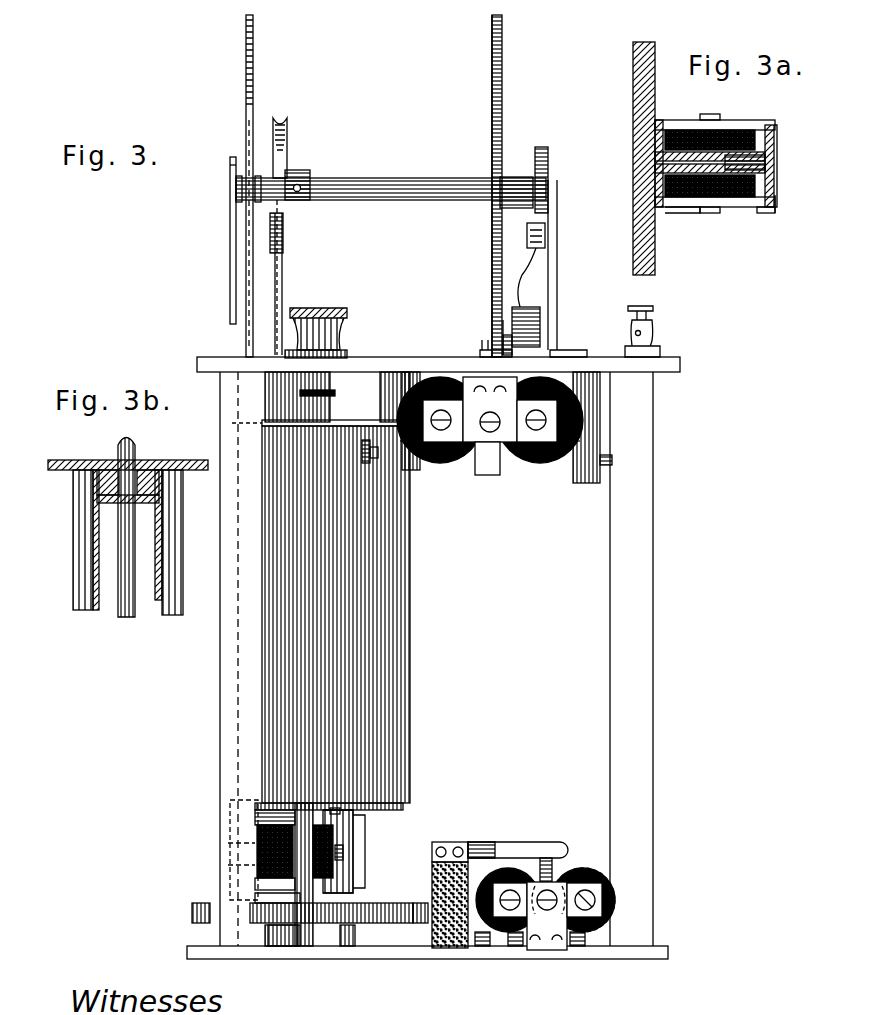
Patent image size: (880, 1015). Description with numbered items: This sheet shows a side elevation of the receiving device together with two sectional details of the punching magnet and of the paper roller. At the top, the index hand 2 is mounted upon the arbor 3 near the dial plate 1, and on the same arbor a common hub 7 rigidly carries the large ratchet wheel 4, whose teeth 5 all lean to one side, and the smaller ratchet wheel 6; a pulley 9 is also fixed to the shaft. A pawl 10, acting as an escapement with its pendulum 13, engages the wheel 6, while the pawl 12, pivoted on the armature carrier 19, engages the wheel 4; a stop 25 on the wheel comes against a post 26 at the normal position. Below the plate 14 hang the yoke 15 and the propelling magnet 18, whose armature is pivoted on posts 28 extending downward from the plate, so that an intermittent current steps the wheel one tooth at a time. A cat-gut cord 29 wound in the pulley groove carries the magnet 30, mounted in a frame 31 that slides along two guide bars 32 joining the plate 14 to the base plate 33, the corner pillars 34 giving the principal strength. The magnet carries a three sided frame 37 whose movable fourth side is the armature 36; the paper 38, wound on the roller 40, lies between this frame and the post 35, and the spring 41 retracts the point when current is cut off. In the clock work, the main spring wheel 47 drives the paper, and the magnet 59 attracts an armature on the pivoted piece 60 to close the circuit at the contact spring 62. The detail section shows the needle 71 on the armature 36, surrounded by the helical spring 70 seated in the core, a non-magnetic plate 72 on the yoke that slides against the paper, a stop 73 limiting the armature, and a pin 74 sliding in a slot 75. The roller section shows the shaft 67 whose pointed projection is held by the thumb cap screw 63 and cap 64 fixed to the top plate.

In FIG. 3, the dial plate 1 is at (256, 70).
In FIG. 3, the index hand 2 is at (230, 238).
In FIG. 3, the arbor 3 is at (384, 182).
In FIG. 3, the ratchet wheel 4 is at (507, 186).
In FIG. 3, the teeth 5 is at (492, 113).
In FIG. 3, the ratchet wheel 6 is at (548, 168).
In FIG. 3, the hub 7 is at (517, 180).
In FIG. 3, the pulley 9 is at (288, 140).
In FIG. 3, the pawl 10 is at (527, 240).
In FIG. 3, the pawl 12 is at (480, 352).
In FIG. 3, the pendulum 13 is at (520, 305).
In FIG. 3, the plate 14 is at (388, 368).
In FIG. 3, the yoke 15 is at (440, 420).
In FIG. 3, the propelling magnet 18 is at (535, 462).
In FIG. 3, the pivoted armature carrier 19 is at (487, 458).
In FIG. 3, the stop 25 is at (503, 325).
In FIG. 3, the post 26 is at (503, 342).
In FIG. 3, the posts 28 is at (420, 470).
In FIG. 3, the cord 29 is at (283, 285).
In FIG. 3, the magnet 30 is at (257, 850).
In FIG. 3a, the magnet 30 is at (705, 130).
In FIG. 3a, the frame 31 is at (722, 116).
In FIG. 3, the guide bars 32 is at (272, 950).
In FIG. 3, the base plate 33 is at (400, 948).
In FIG. 3, the corner pillars 34 is at (220, 697).
In FIG. 3a, the post 35 is at (633, 136).
In FIG. 3, the armature 36 is at (360, 830).
In FIG. 3a, the armature 36 is at (774, 145).
In FIG. 3, the three sided frame 37 is at (240, 800).
In FIG. 3a, the three sided frame 37 is at (700, 213).
In FIG. 3, the paper 38 is at (408, 605).
In FIG. 3b, the paper 38 is at (78, 525).
In FIG. 3, the roller 40 is at (235, 800).
In FIG. 3b, the roller 40 is at (152, 470).
In FIG. 3a, the spring 41 is at (775, 140).
In FIG. 3, the main spring wheel 47 is at (380, 838).
In FIG. 3, the magnet 59 is at (592, 868).
In FIG. 3, the pivoted piece 60 is at (552, 866).
In FIG. 3, the contact spring 62 is at (530, 835).
In FIG. 3, the thumb cap screw 63 is at (340, 308).
In FIG. 3, the cap 64 is at (342, 346).
In FIG. 3, the shaft 67 is at (300, 950).
In FIG. 3b, the shaft 67 is at (118, 448).
In FIG. 3a, the helical spring 70 is at (768, 165).
In FIG. 3a, the puncturing needle 71 is at (660, 165).
In FIG. 3a, the non-magnetic plate 72 is at (660, 125).
In FIG. 3, the stop 73 is at (345, 815).
In FIG. 3a, the stop 73 is at (765, 125).
In FIG. 3a, the pin 74 is at (763, 213).
In FIG. 3a, the slot 75 is at (777, 207).